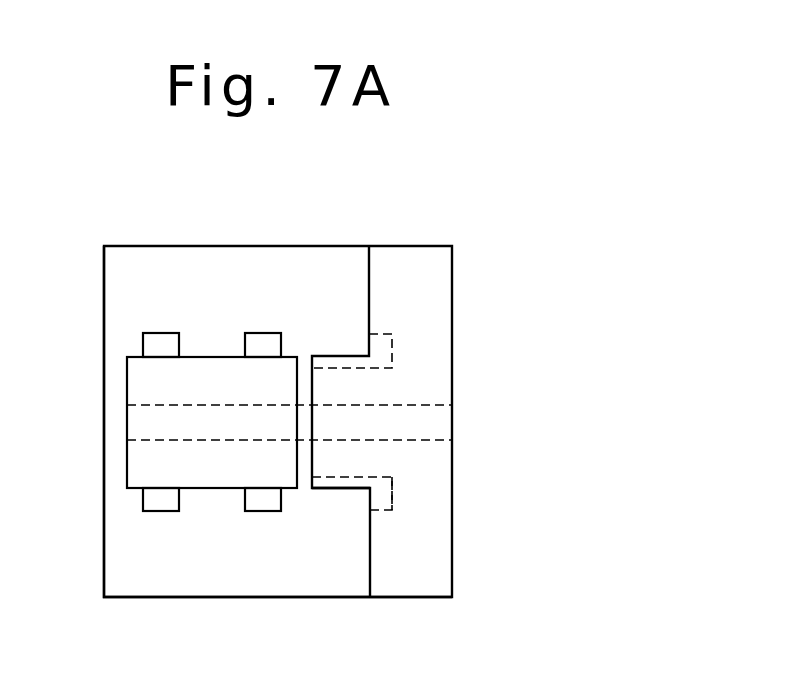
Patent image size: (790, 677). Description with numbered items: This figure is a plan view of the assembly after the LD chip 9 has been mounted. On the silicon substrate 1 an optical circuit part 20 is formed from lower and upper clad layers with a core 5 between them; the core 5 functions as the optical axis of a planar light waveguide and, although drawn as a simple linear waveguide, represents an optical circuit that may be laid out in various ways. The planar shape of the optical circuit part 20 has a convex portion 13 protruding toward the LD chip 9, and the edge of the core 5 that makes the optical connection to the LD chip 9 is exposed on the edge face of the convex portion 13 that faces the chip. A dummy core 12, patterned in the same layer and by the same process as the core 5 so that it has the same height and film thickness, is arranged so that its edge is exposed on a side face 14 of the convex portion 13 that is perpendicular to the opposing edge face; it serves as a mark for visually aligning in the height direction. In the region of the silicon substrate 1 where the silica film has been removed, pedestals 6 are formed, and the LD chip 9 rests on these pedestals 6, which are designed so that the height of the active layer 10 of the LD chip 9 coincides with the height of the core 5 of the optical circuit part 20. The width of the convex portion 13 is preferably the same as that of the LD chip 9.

The silicon substrate 1 is at (113, 522).
The core 5 is at (393, 426).
The pedestals 6 is at (150, 345).
The LD chip 9 is at (135, 390).
The active layer 10 is at (183, 418).
The dummy core 12 is at (372, 348).
The convex portion 13 is at (341, 378).
The side face 14 is at (338, 490).
The optical circuit part 20 is at (400, 262).